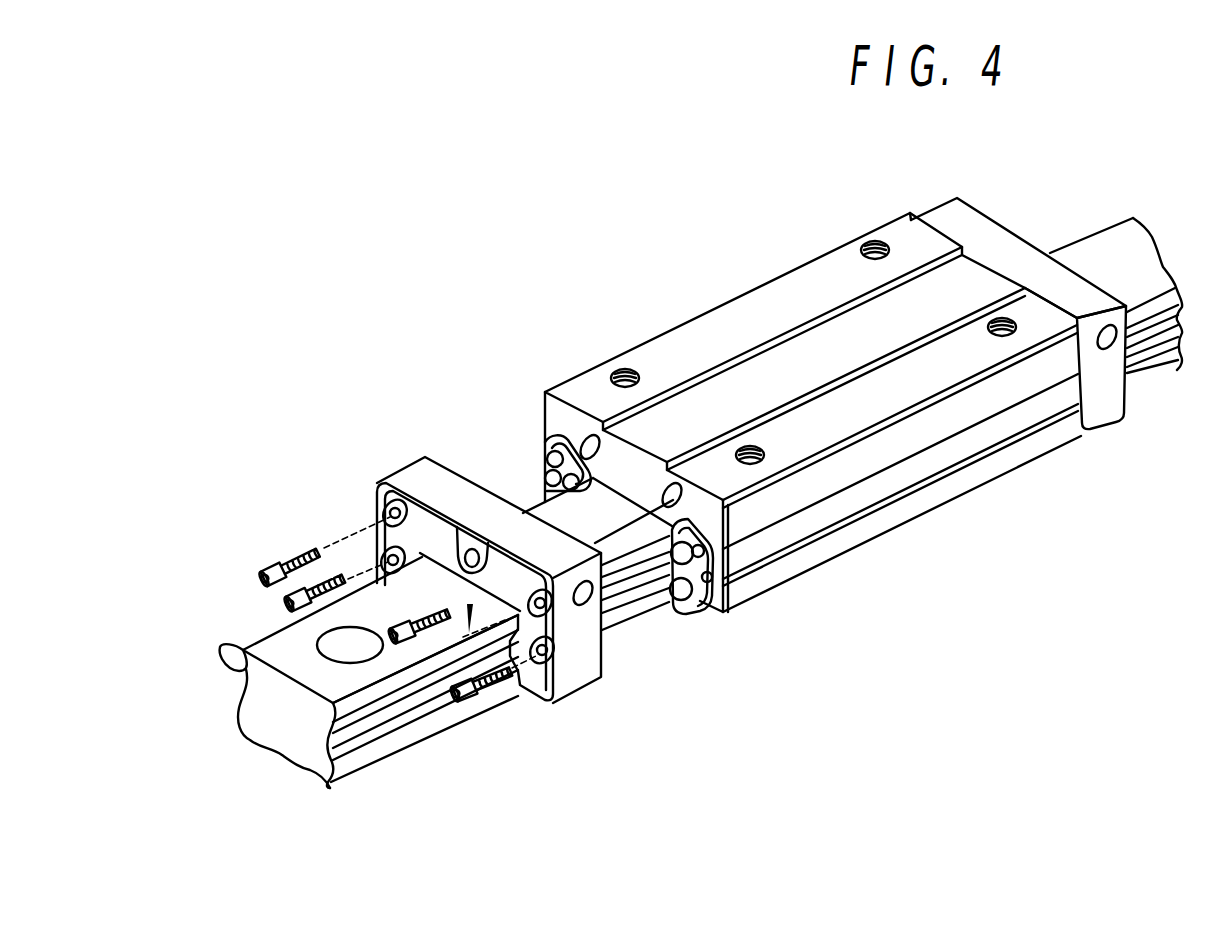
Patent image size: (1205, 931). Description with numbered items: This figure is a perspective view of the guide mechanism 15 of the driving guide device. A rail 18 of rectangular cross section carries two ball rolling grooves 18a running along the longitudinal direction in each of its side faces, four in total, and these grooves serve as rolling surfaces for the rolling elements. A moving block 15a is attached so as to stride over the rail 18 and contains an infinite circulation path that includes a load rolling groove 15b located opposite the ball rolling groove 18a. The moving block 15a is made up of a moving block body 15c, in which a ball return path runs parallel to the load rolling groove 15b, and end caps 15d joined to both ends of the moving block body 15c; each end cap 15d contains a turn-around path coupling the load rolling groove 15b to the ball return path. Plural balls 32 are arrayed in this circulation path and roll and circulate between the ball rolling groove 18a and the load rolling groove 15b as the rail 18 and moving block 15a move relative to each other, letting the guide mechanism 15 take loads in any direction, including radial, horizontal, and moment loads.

The guide mechanism 15 is at (719, 458).
The moving block 15a is at (732, 312).
The load rolling groove 15b is at (722, 598).
The moving block body 15c is at (990, 468).
The end cap 15d is at (1110, 408).
The rail 18 is at (680, 523).
The ball rolling groove 18a is at (222, 646).
The ball 32 is at (548, 462).